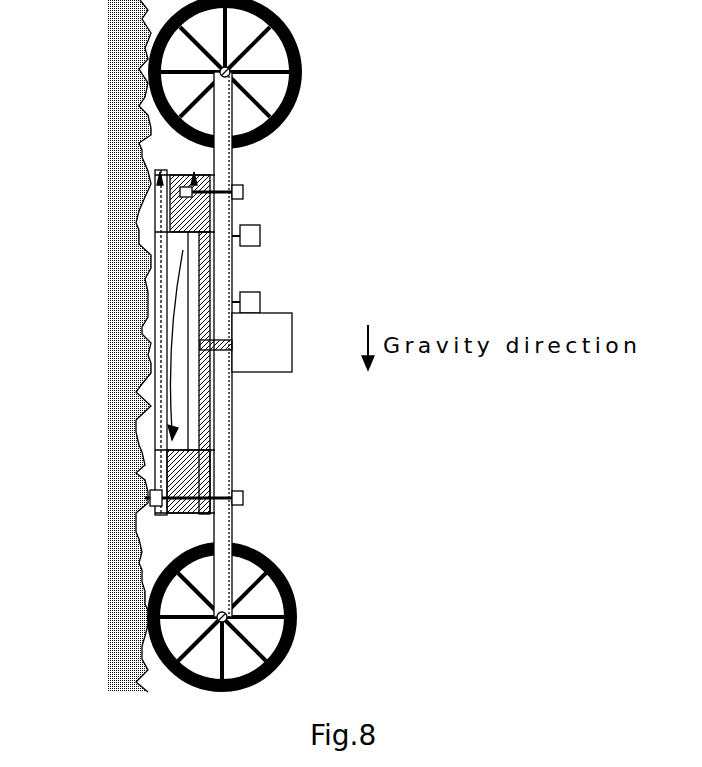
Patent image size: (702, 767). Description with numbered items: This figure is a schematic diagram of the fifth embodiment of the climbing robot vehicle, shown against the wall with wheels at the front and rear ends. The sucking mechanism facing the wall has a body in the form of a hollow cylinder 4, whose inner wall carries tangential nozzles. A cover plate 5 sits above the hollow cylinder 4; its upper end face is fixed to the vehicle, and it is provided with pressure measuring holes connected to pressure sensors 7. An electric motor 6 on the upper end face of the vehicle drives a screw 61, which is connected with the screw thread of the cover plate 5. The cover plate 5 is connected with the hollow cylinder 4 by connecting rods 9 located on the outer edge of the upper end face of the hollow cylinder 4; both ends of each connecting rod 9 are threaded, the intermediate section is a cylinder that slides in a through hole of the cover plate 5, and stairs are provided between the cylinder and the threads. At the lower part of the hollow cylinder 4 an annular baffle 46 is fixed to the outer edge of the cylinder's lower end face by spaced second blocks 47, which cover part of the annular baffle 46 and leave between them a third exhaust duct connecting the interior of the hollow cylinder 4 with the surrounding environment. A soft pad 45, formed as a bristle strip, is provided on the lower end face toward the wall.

The hollow cylinder 4 is at (165, 218).
The cover plate 5 is at (207, 415).
The electric motor 6 is at (256, 358).
The pressure sensors 7 is at (256, 232).
The connecting rods 9 is at (232, 180).
The soft pad 45 is at (160, 182).
The annular baffle 46 is at (160, 230).
The second blocks 47 is at (160, 195).
The screw 61 is at (222, 357).